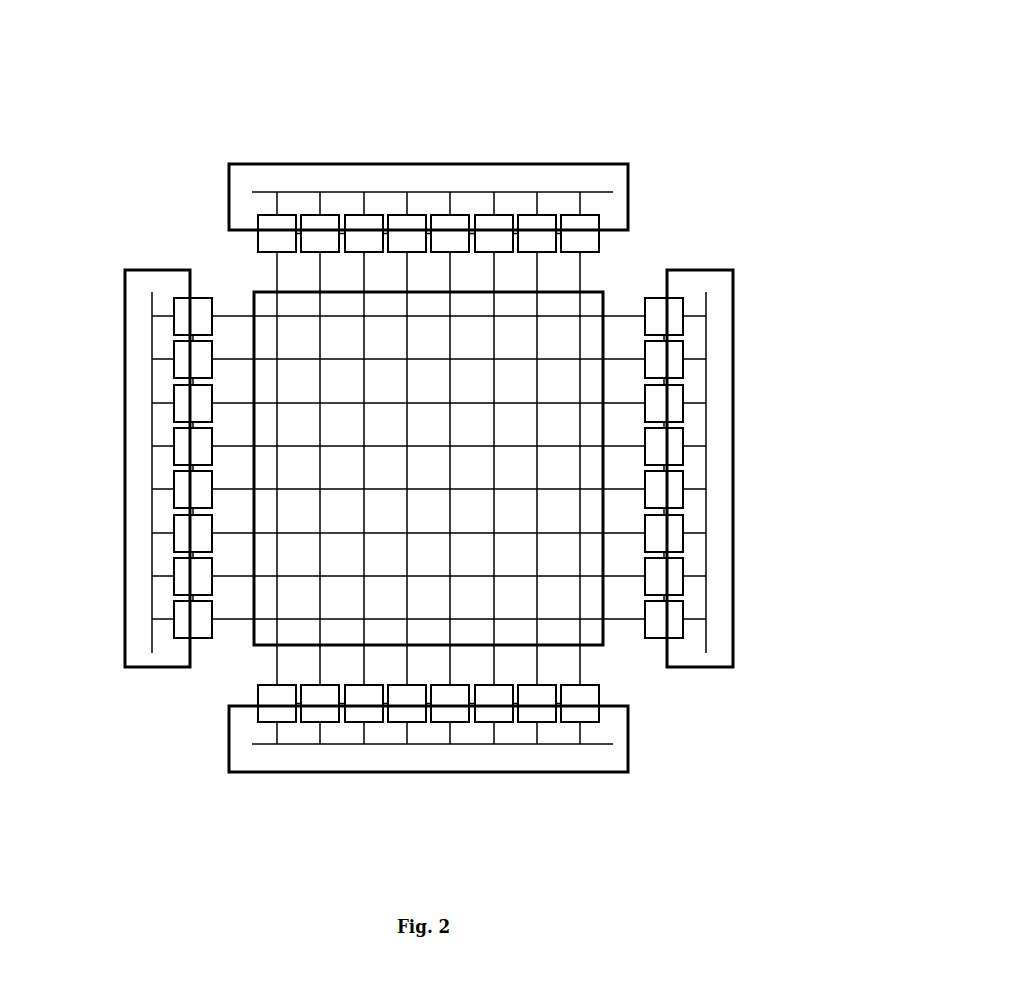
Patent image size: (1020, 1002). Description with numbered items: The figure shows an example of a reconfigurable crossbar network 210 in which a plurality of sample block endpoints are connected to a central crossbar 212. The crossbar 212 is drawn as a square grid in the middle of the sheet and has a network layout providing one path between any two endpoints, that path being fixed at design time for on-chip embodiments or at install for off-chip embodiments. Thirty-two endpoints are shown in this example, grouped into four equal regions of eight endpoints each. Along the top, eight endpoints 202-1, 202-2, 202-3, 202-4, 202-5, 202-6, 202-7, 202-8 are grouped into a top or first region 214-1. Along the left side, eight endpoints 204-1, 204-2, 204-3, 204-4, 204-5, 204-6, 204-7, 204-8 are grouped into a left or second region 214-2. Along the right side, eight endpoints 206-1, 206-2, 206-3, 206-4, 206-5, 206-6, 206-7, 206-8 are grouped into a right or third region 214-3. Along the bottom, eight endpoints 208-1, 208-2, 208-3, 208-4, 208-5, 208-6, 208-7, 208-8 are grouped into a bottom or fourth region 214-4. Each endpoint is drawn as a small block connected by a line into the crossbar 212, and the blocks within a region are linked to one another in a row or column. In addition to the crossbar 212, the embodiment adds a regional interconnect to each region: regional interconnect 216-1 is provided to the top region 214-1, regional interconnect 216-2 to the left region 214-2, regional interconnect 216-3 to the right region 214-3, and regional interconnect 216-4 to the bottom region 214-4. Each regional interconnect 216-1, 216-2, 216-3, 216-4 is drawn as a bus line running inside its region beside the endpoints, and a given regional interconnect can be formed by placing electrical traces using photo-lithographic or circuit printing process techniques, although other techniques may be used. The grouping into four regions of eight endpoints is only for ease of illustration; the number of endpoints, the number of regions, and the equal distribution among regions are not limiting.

The reconfigurable crossbar network 210 is at (737, 96).
The crossbar 212 is at (254, 635).
The top region 214-1 is at (608, 165).
The left region 214-2 is at (123, 285).
The right region 214-3 is at (733, 283).
The bottom region 214-4 is at (608, 773).
The regional interconnect 216-1 is at (302, 192).
The regional interconnect 216-2 is at (152, 602).
The regional interconnect 216-3 is at (707, 608).
The regional interconnect 216-4 is at (303, 744).
The endpoint 202-1 is at (267, 215).
The endpoint 202-2 is at (326, 215).
The endpoint 202-3 is at (372, 215).
The endpoint 202-4 is at (410, 215).
The endpoint 202-5 is at (456, 215).
The endpoint 202-6 is at (496, 215).
The endpoint 202-7 is at (542, 215).
The endpoint 202-8 is at (582, 215).
The endpoint 204-1 is at (174, 308).
The endpoint 204-2 is at (174, 351).
The endpoint 204-3 is at (174, 395).
The endpoint 204-4 is at (174, 438).
The endpoint 204-5 is at (174, 481).
The endpoint 204-6 is at (174, 525).
The endpoint 204-7 is at (174, 568).
The endpoint 204-8 is at (174, 635).
The endpoint 206-1 is at (683, 308).
The endpoint 206-2 is at (683, 351).
The endpoint 206-3 is at (683, 395).
The endpoint 206-4 is at (683, 438).
The endpoint 206-5 is at (683, 481).
The endpoint 206-6 is at (683, 525).
The endpoint 206-7 is at (683, 568).
The endpoint 206-8 is at (683, 630).
The endpoint 208-1 is at (267, 722).
The endpoint 208-2 is at (326, 722).
The endpoint 208-3 is at (372, 722).
The endpoint 208-4 is at (410, 722).
The endpoint 208-5 is at (456, 722).
The endpoint 208-6 is at (496, 722).
The endpoint 208-7 is at (542, 722).
The endpoint 208-8 is at (582, 722).